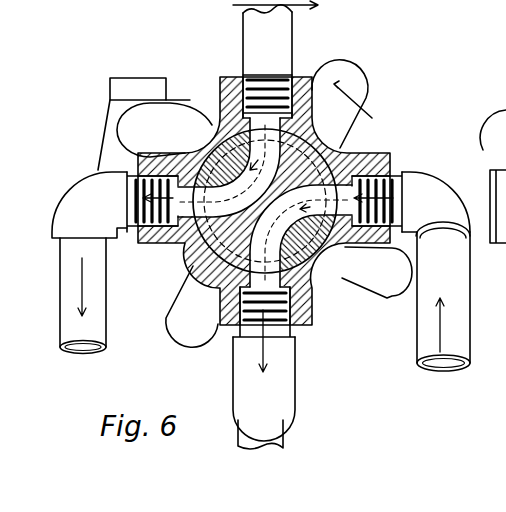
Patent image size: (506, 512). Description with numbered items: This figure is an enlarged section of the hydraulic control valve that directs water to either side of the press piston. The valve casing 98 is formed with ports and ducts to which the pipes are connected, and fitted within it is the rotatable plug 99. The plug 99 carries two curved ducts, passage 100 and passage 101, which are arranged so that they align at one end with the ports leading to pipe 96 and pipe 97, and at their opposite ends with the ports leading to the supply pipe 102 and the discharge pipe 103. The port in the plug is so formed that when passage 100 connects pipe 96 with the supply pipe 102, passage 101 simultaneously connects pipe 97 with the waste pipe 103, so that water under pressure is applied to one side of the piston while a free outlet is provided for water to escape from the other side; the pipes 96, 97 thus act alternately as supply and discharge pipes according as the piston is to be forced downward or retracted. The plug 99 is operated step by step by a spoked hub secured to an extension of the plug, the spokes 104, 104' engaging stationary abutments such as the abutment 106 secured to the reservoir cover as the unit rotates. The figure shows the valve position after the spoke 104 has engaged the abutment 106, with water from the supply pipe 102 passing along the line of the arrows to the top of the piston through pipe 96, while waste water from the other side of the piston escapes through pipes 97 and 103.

The pipe 96 is at (96, 318).
The pipe 97 is at (450, 284).
The valve casing 98 is at (382, 149).
The plug 99 is at (342, 146).
The duct 100 is at (208, 163).
The duct 101 is at (320, 282).
The supply pipe 102 is at (283, 27).
The discharge pipe 103 is at (280, 429).
The spoke 104 is at (277, 212).
The spoke 104' is at (237, 218).
The abutment 106 is at (132, 82).